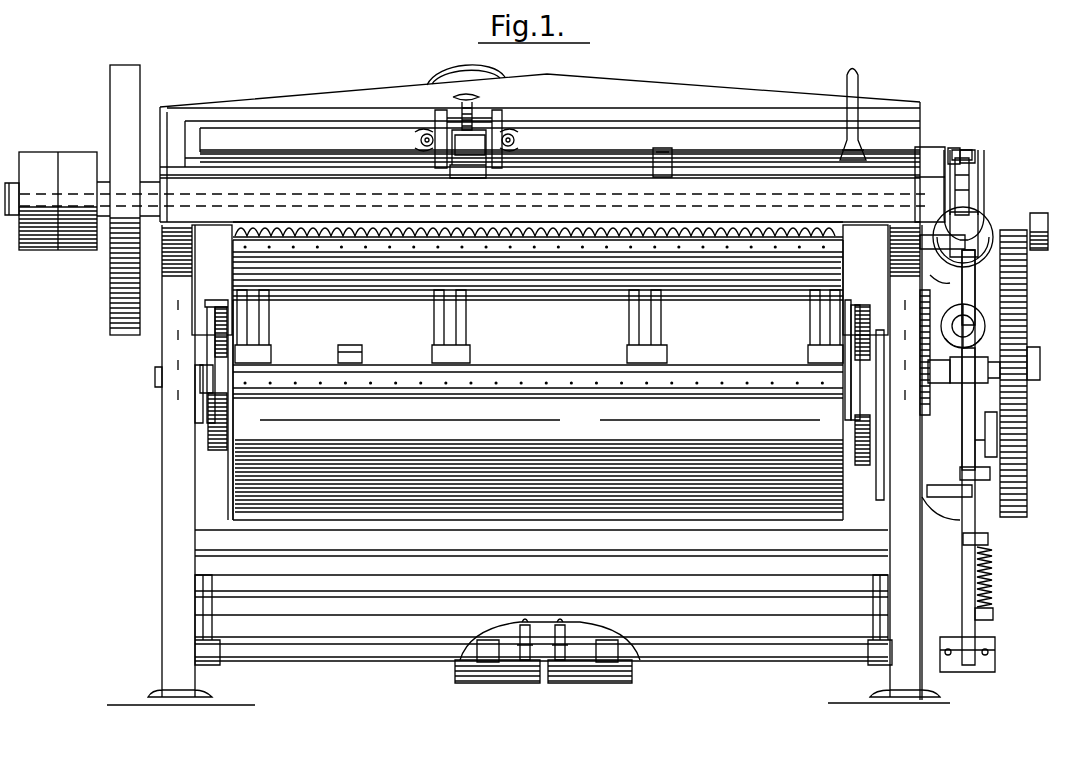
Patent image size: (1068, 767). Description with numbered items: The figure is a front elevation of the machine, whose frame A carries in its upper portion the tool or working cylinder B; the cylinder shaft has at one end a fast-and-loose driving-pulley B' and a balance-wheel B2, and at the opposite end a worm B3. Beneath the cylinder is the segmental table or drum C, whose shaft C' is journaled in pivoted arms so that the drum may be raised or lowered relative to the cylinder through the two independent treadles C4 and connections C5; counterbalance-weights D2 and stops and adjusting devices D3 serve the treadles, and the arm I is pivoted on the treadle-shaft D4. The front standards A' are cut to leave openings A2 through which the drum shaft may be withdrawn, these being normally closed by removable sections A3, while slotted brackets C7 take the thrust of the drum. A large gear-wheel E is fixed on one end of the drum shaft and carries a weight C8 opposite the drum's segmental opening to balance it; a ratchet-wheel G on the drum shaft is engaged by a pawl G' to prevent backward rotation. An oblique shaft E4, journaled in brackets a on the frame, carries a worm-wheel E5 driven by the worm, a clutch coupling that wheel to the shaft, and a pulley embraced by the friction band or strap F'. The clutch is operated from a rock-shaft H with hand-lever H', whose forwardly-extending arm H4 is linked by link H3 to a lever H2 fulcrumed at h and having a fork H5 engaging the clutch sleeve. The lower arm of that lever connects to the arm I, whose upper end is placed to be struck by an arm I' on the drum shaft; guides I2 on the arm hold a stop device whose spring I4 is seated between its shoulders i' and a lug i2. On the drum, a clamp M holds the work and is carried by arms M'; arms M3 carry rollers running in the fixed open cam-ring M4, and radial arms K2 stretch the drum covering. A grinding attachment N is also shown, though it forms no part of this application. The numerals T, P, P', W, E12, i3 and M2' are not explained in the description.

The fast-and-loose driving-pulley B' is at (51, 181).
The balance-wheel B2 is at (128, 82).
The grinding attachment N is at (619, 84).
The tool or working cylinder B is at (538, 149).
The hand-lever H' is at (873, 112).
The thumb screw T is at (452, 99).
The carriage P is at (468, 130).
The carriage rollers P' is at (461, 116).
The carriage block W is at (520, 138).
The rock-shaft H is at (560, 152).
The frame A is at (513, 209).
The worm B3 is at (970, 175).
The forwardly-extending arm H4 is at (952, 148).
The link H3 is at (968, 150).
The fork H5 is at (985, 165).
The worm-wheel E5 is at (990, 222).
The weight C8 is at (1040, 213).
The fulcrum h is at (940, 240).
The gear-wheel E is at (1027, 326).
The pawl G' is at (888, 462).
The ratchet-wheel G is at (909, 352).
The brackets a is at (940, 285).
The oblique shaft E4 is at (968, 278).
The lever H2 is at (950, 318).
The friction band or strap F' is at (919, 366).
The arm I' is at (997, 363).
The rod E12 is at (975, 405).
The bracket i3 is at (988, 434).
The arm I is at (948, 457).
The guides I2 is at (996, 540).
The spring I4 is at (992, 577).
The shoulders i' is at (1001, 559).
The lug i2 is at (993, 614).
The clamp M is at (520, 263).
The rail M2' is at (538, 331).
The arms M' is at (539, 326).
The radial arms K2 is at (430, 336).
The segmental table or drum C is at (538, 380).
The front standards A' is at (544, 461).
The removable sections A3 is at (180, 402).
The openings A2 is at (185, 430).
The shaft C' is at (489, 361).
The slotted brackets C7 is at (207, 380).
The arms M3 is at (215, 343).
The open cam-ring M4 is at (215, 425).
The connections C5 is at (200, 606).
The treadle-shaft D4 is at (338, 670).
The counterbalance-weights D2 is at (468, 655).
The treadles C4 is at (520, 683).
The stops and adjusting devices D3 is at (560, 660).